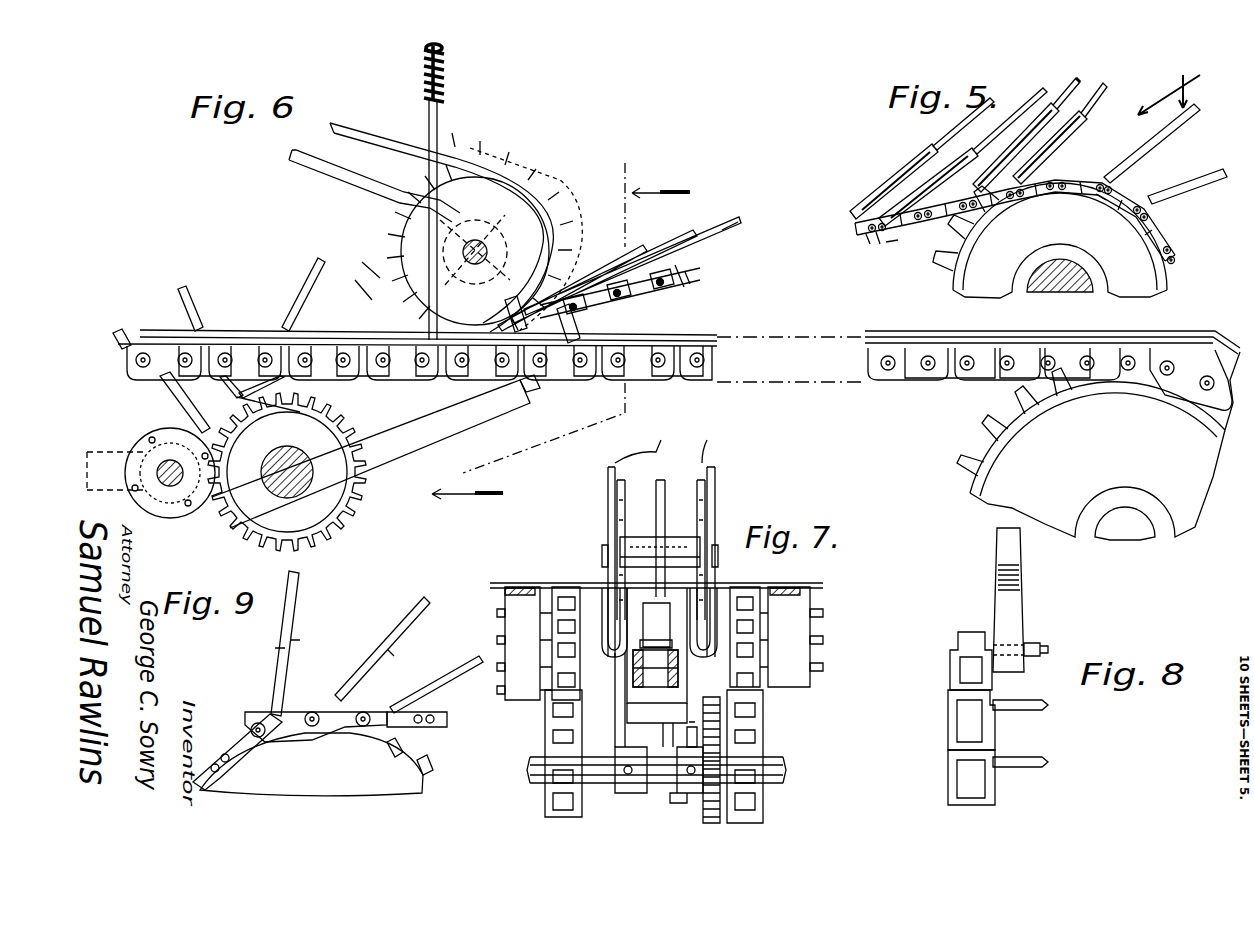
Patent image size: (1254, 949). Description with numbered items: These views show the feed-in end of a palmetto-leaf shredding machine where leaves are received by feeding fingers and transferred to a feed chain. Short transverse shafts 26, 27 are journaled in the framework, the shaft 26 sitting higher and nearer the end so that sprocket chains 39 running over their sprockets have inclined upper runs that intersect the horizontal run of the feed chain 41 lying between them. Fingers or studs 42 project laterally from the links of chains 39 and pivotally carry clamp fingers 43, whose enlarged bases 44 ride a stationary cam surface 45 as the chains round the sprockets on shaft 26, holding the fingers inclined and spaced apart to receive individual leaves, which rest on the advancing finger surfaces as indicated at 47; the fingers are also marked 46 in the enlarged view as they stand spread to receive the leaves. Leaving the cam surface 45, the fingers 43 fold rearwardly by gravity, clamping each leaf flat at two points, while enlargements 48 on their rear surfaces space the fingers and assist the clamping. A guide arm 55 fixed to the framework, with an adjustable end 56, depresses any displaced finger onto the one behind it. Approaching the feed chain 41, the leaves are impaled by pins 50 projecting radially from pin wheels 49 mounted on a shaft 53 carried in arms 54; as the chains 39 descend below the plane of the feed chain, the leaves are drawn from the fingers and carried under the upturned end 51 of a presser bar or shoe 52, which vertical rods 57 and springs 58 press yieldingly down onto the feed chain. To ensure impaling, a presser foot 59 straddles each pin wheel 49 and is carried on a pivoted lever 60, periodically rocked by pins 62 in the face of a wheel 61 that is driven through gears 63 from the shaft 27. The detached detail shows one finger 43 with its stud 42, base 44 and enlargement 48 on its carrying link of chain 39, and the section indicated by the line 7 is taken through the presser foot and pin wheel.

In FIG. 6, the section line 7 7 is at (561, 331).
In FIG. 6, the shaft 26 is at (1098, 446).
In FIG. 5, the shaft 26 is at (1078, 268).
In FIG. 6, the shaft 27 is at (305, 458).
In FIG. 7, the shaft 27 is at (786, 773).
In FIG. 6, the sprocket chains 39 is at (620, 297).
In FIG. 5, the sprocket chains 39 is at (862, 232).
In FIG. 7, the sprocket chains 39 is at (576, 660).
In FIG. 8, the sprocket chains 39 is at (950, 684).
In FIG. 6, the feed chain 41 is at (125, 366).
In FIG. 5, the fingers or studs 42 is at (872, 244).
In FIG. 7, the fingers or studs 42 is at (805, 612).
In FIG. 8, the fingers or studs 42 is at (1044, 644).
In FIG. 6, the clamp fingers 43 is at (318, 270).
In FIG. 5, the clamp fingers 43 is at (1072, 74).
In FIG. 7, the clamp fingers 43 is at (502, 627).
In FIG. 8, the clamp fingers 43 is at (1015, 548).
In FIG. 9, the clamp fingers 43 is at (425, 600).
In FIG. 6, the enlarged bases 44 is at (659, 291).
In FIG. 5, the enlarged bases 44 is at (905, 240).
In FIG. 8, the enlarged bases 44 is at (1050, 645).
In FIG. 9, the enlarged bases 44 is at (368, 735).
In FIG. 9, the stationary cam surface 45 is at (422, 782).
In FIG. 5, the rod 46 is at (972, 157).
In FIG. 5, the leaf position 47 is at (1169, 83).
In FIG. 6, the enlargements 48 is at (300, 318).
In FIG. 5, the enlargements 48 is at (1080, 135).
In FIG. 8, the enlargements 48 is at (1020, 580).
In FIG. 9, the enlargements 48 is at (290, 633).
In FIG. 6, the pin wheels 49 is at (371, 292).
In FIG. 7, the pin wheels 49 is at (700, 500).
In FIG. 6, the pins 50 is at (380, 246).
In FIG. 7, the pins 50 is at (661, 444).
In FIG. 6, the upturned end 51 is at (478, 278).
In FIG. 6, the presser bar or shoe 52 is at (255, 330).
In FIG. 6, the shaft 53 is at (480, 240).
In FIG. 6, the arms 54 is at (358, 182).
In FIG. 6, the guide arm 55 is at (386, 133).
In FIG. 6, the end of guide arm 56 is at (548, 194).
In FIG. 6, the vertical rods 57 is at (433, 220).
In FIG. 7, the vertical rods 57 is at (660, 524).
In FIG. 6, the springs 58 is at (450, 76).
In FIG. 6, the presser foot 59 is at (568, 325).
In FIG. 7, the presser foot 59 is at (606, 596).
In FIG. 6, the lever 60 is at (428, 428).
In FIG. 7, the lever 60 is at (648, 724).
In FIG. 6, the wheel 61 is at (158, 430).
In FIG. 7, the wheel 61 is at (692, 724).
In FIG. 6, the pins 62 is at (140, 440).
In FIG. 7, the pins 62 is at (672, 747).
In FIG. 6, the gears 63 is at (272, 412).
In FIG. 7, the gears 63 is at (722, 720).